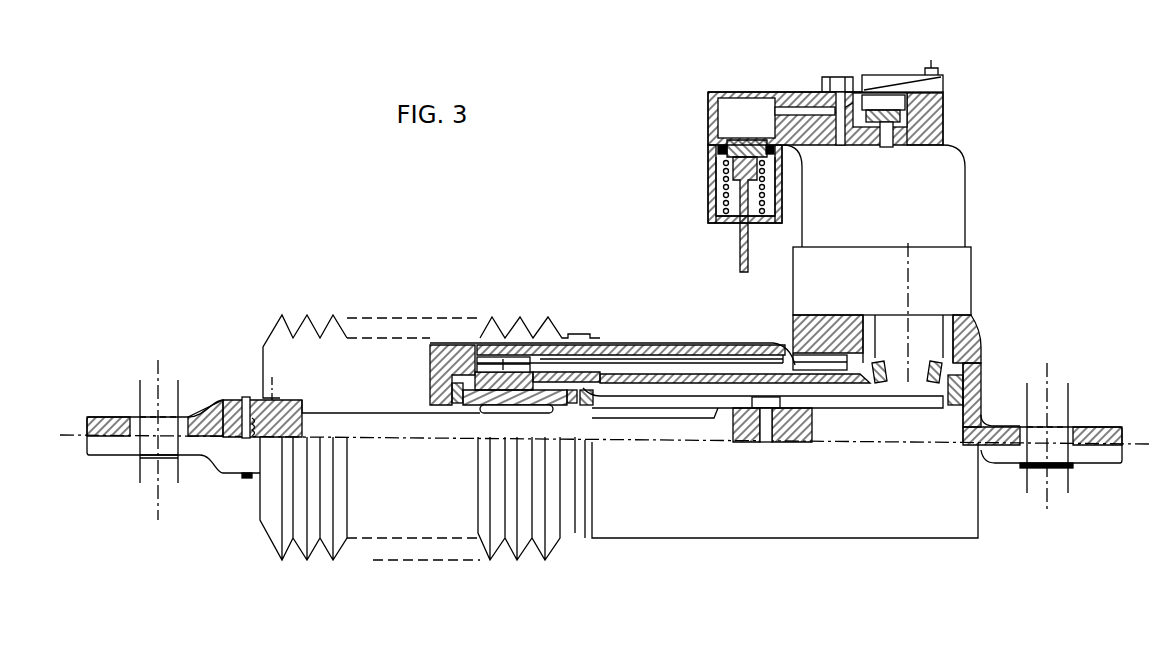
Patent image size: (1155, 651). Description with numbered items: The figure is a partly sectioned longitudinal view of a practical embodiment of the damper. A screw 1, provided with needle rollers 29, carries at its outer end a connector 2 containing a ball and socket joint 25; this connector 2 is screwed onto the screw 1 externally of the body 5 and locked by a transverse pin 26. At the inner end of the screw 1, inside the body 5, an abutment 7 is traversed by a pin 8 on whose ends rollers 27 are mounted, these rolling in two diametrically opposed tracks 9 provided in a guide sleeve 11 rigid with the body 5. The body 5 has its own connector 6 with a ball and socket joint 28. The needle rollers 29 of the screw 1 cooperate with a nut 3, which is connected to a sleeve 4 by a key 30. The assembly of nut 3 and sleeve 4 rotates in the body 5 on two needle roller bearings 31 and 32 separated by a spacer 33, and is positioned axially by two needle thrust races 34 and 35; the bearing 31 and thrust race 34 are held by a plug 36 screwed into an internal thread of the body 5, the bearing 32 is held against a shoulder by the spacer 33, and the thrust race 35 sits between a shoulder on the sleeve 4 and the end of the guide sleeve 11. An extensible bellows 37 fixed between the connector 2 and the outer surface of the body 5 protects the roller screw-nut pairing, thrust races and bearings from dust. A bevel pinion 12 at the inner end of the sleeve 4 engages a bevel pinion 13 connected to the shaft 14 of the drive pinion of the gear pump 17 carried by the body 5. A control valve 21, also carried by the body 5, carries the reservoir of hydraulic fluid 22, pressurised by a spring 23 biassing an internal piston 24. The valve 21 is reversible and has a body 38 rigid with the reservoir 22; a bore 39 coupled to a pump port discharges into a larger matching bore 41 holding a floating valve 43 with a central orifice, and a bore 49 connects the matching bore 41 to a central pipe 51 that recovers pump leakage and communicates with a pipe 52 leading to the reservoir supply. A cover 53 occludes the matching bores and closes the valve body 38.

The screw 1 is at (340, 427).
The connector 2 is at (97, 419).
The nut 3 is at (472, 404).
The sleeve 4 is at (725, 375).
The body 5 is at (688, 346).
The connector 6 is at (1105, 427).
The abutment 7 is at (800, 430).
The pin 8 is at (765, 432).
The tracks 9 is at (905, 400).
The guide sleeve 11 is at (598, 386).
The bevel pinion 12 is at (870, 360).
The bevel pinion 13 is at (965, 367).
The shaft 14 is at (915, 328).
The gear pump 17 is at (940, 210).
The control valve 21 is at (948, 133).
The reservoir of hydraulic fluid 22 is at (708, 97).
The spring 23 is at (730, 200).
The internal piston 24 is at (718, 148).
The ball and socket joint 25 is at (134, 423).
The transverse pin 26 is at (245, 397).
The rollers 27 is at (762, 402).
The ball and socket joint 28 is at (1072, 428).
The needle rollers 29 is at (520, 407).
The key 30 is at (496, 358).
The needle roller bearing 31 is at (522, 358).
The needle roller bearing 32 is at (803, 360).
The spacer 33 is at (652, 360).
The needle thrust race 34 is at (453, 400).
The needle thrust race 35 is at (583, 405).
The plug 36 is at (430, 365).
The extensible bellows 37 is at (284, 316).
The body 38 is at (944, 98).
The bore 39 is at (886, 148).
The matching bore 41 is at (897, 95).
The valve 43 is at (944, 120).
The bore 49 is at (853, 88).
The central pipe 51 is at (840, 147).
The pipe 52 is at (792, 112).
The cover 53 is at (912, 83).